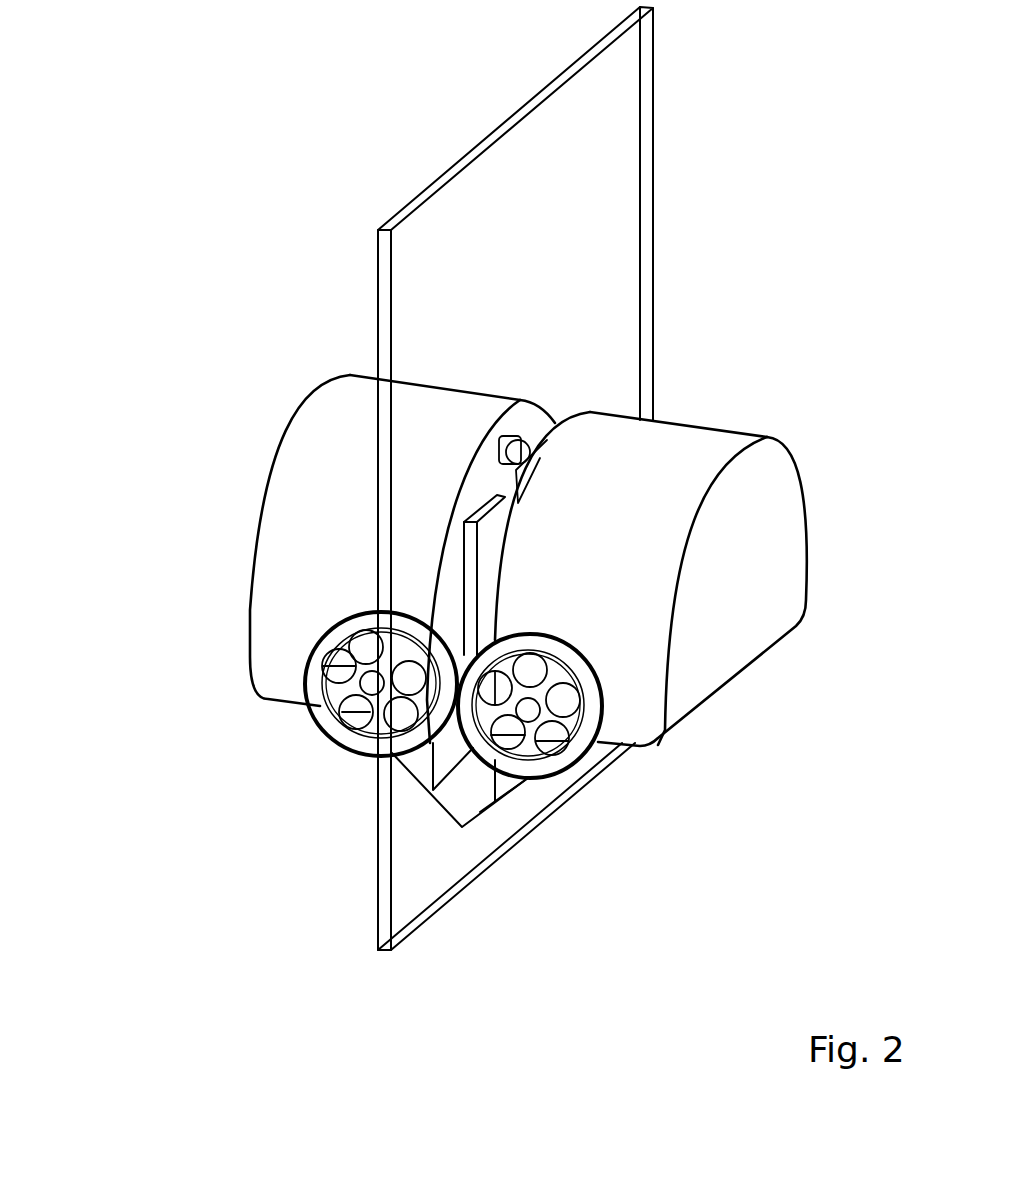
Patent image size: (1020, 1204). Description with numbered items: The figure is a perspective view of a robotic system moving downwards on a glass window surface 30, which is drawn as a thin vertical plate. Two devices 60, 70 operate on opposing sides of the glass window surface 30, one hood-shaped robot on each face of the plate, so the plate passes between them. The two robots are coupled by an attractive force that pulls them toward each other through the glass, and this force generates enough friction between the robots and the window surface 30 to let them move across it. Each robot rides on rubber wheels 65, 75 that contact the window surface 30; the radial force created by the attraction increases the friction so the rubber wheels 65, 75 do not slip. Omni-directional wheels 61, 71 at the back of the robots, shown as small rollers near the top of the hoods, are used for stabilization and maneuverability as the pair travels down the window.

The glass window surface 30 is at (386, 770).
The device 60 is at (677, 460).
The omni-directional wheel 61 is at (550, 433).
The rubber wheel 65 is at (567, 760).
The device 70 is at (313, 505).
The omni-directional wheel 71 is at (517, 438).
The rubber wheel 75 is at (322, 708).